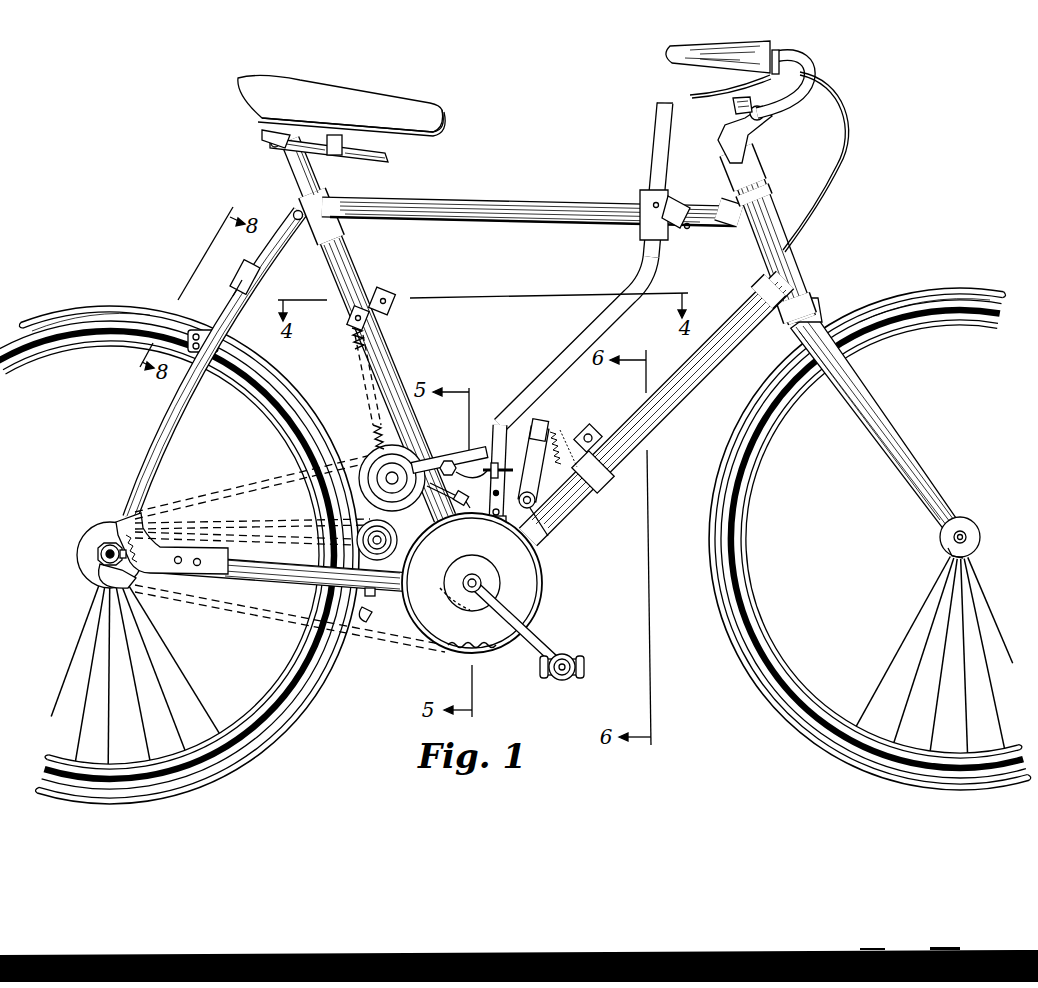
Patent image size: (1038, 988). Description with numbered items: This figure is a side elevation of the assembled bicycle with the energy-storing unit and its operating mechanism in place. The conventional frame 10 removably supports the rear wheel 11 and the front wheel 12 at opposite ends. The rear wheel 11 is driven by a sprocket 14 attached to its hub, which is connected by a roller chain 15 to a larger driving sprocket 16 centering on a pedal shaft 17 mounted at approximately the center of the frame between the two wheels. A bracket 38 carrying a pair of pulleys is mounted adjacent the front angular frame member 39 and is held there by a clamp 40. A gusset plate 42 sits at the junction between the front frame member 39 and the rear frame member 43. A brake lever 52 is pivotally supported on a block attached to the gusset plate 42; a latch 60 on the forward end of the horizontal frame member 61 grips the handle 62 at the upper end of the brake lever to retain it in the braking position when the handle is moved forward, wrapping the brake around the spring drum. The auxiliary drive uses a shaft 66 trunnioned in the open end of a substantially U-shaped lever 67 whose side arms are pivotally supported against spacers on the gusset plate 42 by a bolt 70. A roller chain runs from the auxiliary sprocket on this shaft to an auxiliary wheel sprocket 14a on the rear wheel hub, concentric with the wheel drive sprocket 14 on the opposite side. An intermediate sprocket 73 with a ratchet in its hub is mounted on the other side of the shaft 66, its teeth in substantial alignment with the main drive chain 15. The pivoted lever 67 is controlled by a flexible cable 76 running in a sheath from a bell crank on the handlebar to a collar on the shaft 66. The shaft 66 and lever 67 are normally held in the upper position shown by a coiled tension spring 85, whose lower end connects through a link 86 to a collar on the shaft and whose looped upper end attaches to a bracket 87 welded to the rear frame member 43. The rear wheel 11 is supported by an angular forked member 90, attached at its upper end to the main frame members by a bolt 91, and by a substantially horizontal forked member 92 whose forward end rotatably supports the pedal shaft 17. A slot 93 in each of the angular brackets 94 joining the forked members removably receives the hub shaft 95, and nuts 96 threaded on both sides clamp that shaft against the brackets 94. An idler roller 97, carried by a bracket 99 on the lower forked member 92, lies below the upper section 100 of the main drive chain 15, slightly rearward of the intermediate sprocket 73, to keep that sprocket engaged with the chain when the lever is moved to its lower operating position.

The frame 10 is at (531, 216).
The rear wheel 11 is at (48, 306).
The front wheel 12 is at (889, 293).
The sprocket 14 is at (87, 588).
The auxiliary wheel sprocket 14a is at (93, 522).
The roller chain 15 is at (373, 638).
The driving sprocket 16 is at (462, 655).
The pedal shaft 17 is at (472, 580).
The bracket 38 is at (553, 430).
The front angular frame member 39 is at (712, 366).
The clamp 40 is at (600, 436).
The gusset plate 42 is at (513, 460).
The rear frame member 43 is at (388, 349).
The brake lever 52 is at (573, 344).
The latch 60 is at (672, 213).
The horizontal frame member 61 is at (586, 226).
The handle 62 is at (652, 143).
The shaft 66 is at (395, 476).
The U-shaped lever 67 is at (424, 466).
The bolt 70 is at (462, 449).
The intermediate sprocket 73 is at (377, 461).
The flexible cable 76 is at (424, 540).
The coiled tension spring 85 is at (345, 338).
The link 86 is at (371, 440).
The bracket 87 is at (380, 292).
The angular forked member 90 is at (164, 426).
The bolt 91 is at (294, 212).
The horizontal forked member 92 is at (294, 580).
The slot 93 is at (98, 554).
The angular brackets 94 is at (150, 574).
The shaft 95 is at (98, 546).
The nuts 96 is at (98, 557).
The idler roller 97 is at (385, 580).
The bracket 99 is at (365, 620).
The upper section 100 is at (273, 519).